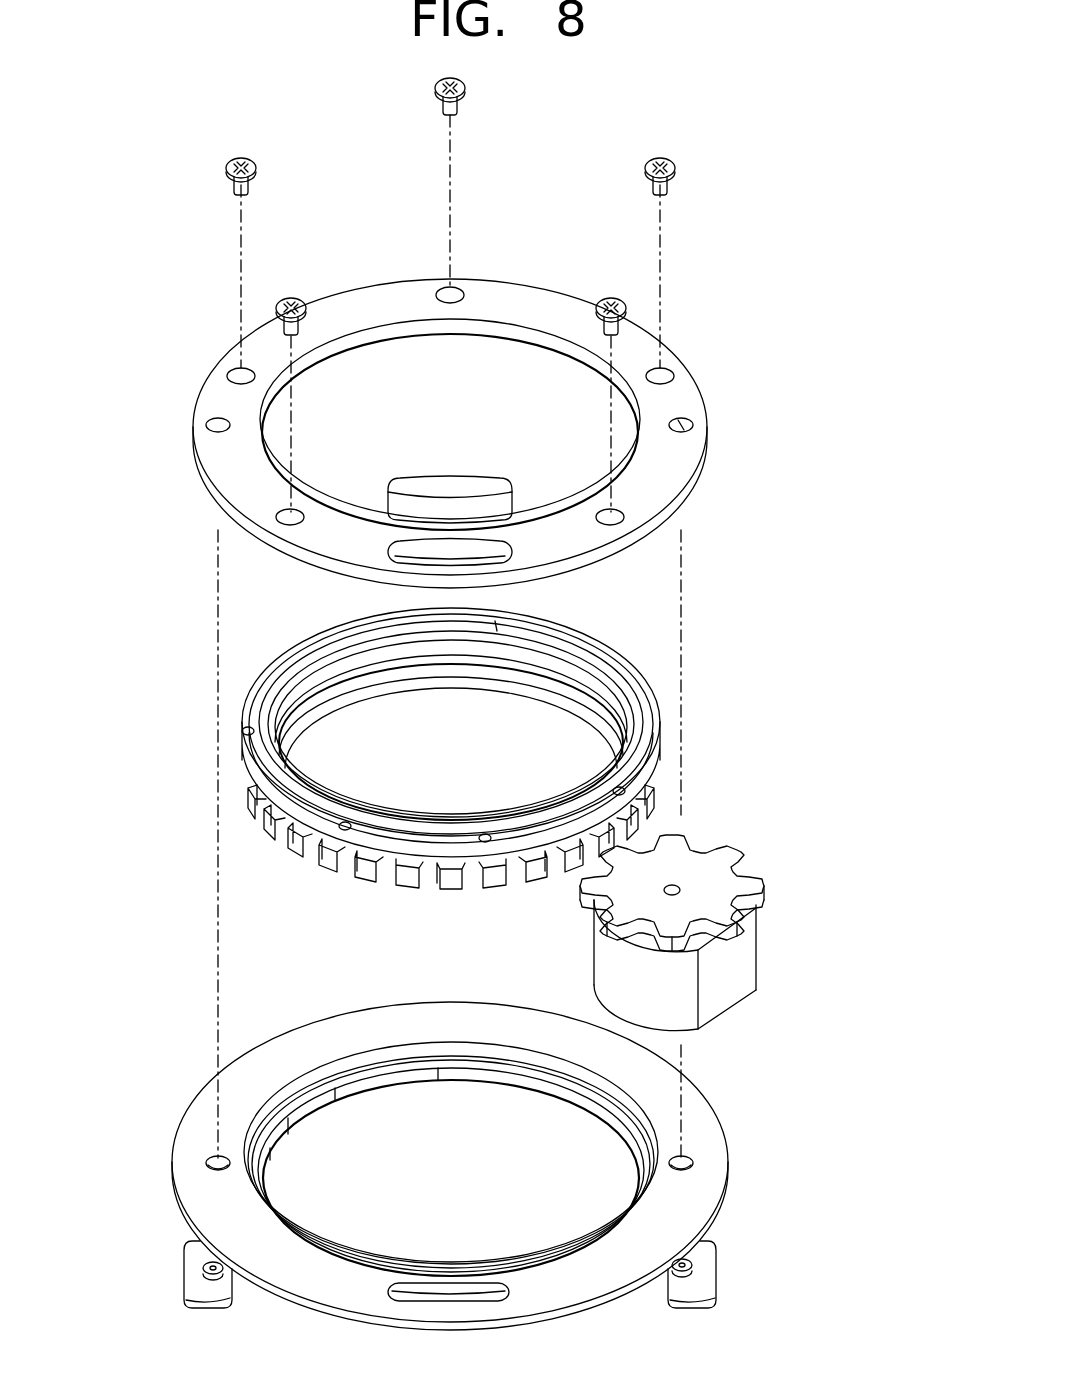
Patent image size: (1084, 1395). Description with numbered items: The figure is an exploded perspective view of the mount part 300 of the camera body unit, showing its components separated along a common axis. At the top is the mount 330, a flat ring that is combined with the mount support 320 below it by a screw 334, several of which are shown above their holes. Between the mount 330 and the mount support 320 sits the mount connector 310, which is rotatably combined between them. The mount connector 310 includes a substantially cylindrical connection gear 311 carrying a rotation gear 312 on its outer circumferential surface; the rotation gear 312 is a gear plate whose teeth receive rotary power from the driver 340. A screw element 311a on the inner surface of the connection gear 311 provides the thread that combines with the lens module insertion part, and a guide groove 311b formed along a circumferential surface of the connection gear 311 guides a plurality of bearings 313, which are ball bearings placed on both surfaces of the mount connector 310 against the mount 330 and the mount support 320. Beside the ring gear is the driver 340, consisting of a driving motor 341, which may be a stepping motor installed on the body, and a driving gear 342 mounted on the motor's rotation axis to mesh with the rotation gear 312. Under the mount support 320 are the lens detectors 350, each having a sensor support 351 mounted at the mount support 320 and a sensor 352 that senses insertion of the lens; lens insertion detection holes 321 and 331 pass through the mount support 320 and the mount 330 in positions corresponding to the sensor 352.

The mount part 300 is at (745, 110).
The mount connector 310 is at (451, 786).
The connection gear 311 is at (391, 723).
The screw element 311a is at (330, 658).
The guide groove 311b is at (258, 713).
The rotation gear 312 is at (355, 882).
The bearings 313 is at (246, 733).
The mount support 320 is at (503, 1166).
The lens insertion detection hole 321 is at (690, 1157).
The mount 330 is at (454, 433).
The lens insertion detection hole 331 is at (682, 424).
The screw 334 is at (674, 178).
The driver 340 is at (754, 931).
The driving motor 341 is at (728, 965).
The driving gear 342 is at (757, 872).
The lens detector 350 is at (522, 1271).
The sensor support 351 is at (690, 1264).
The sensor 352 is at (705, 1287).